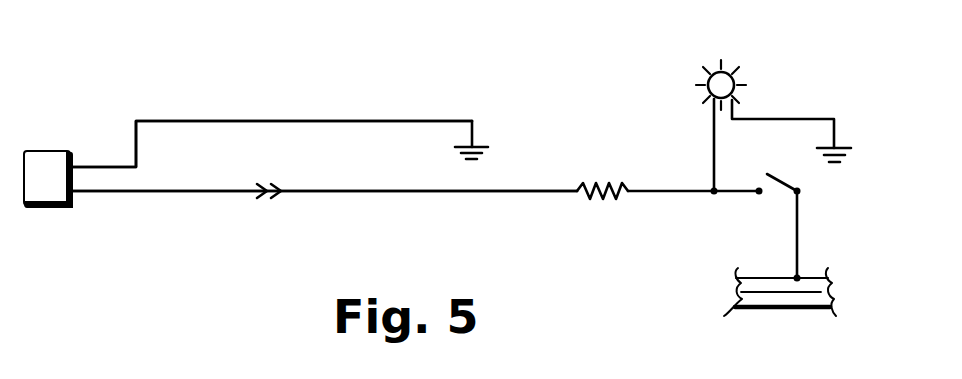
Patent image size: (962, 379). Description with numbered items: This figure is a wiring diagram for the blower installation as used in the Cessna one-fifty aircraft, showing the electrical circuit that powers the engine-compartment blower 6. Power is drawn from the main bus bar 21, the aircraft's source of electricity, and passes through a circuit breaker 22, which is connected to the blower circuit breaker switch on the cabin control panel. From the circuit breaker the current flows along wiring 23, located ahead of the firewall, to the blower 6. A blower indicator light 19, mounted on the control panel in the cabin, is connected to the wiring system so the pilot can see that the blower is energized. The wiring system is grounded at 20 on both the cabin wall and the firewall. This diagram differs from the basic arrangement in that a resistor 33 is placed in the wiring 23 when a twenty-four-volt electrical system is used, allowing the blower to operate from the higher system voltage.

The blower 6 is at (42, 150).
The blower indicator light 19 is at (730, 68).
The ground 20 is at (482, 144).
The bus bar 21 is at (830, 288).
The circuit breaker 22 is at (783, 183).
The wiring 23 is at (195, 191).
The resistor 33 is at (603, 181).